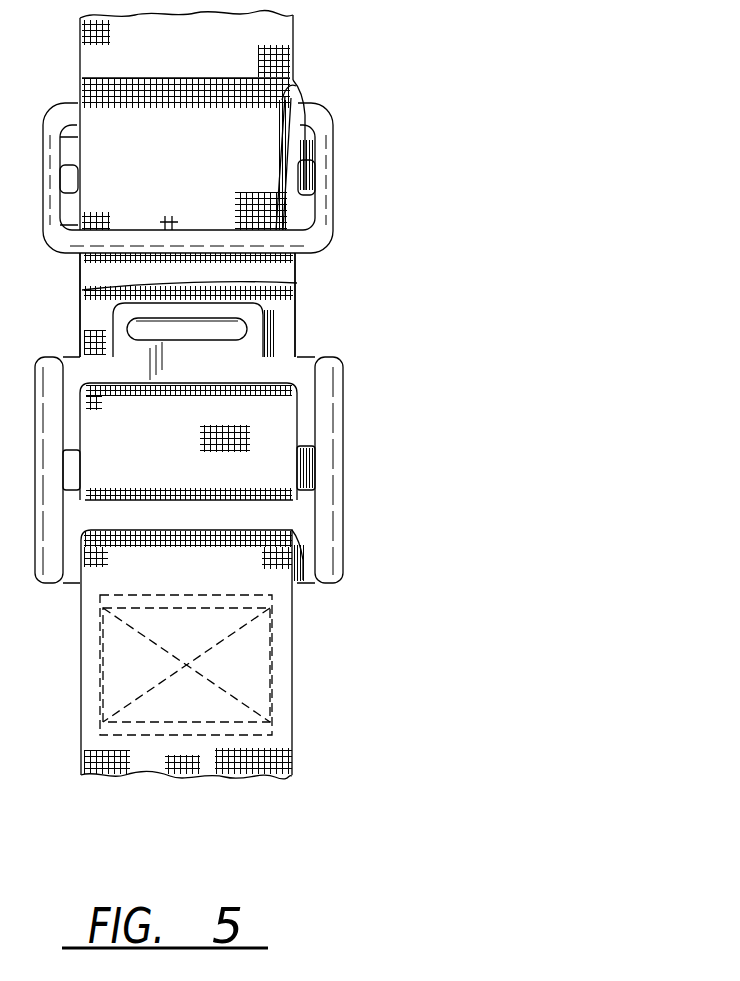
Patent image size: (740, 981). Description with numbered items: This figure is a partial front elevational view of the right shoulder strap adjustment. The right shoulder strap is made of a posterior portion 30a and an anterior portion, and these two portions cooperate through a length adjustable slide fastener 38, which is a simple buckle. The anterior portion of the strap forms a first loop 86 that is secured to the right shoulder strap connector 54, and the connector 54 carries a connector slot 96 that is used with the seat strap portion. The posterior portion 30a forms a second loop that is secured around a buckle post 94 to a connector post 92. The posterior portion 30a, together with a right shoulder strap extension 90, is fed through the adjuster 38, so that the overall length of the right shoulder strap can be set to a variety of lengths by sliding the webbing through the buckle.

The posterior portion of right shoulder strap 30a is at (290, 55).
The buckle post 94 is at (300, 167).
The length adjustable slide fastener 38 is at (325, 210).
The right shoulder strap extension 90 is at (283, 287).
The connector slot 96 is at (232, 343).
The connector post 92 is at (307, 467).
The right shoulder strap connector 54 is at (342, 520).
The first loop 86 is at (300, 583).